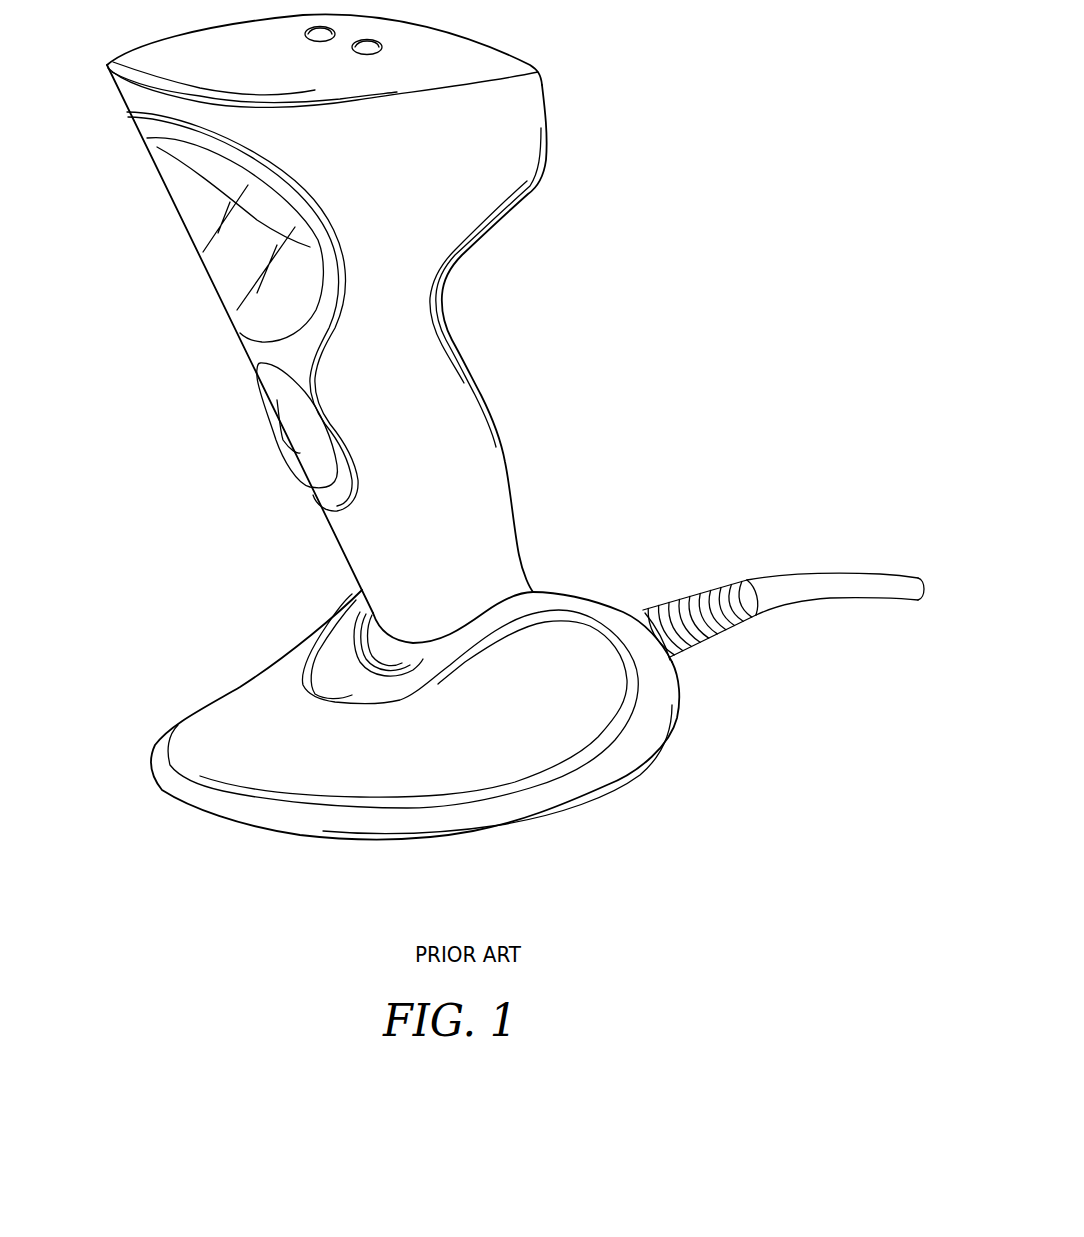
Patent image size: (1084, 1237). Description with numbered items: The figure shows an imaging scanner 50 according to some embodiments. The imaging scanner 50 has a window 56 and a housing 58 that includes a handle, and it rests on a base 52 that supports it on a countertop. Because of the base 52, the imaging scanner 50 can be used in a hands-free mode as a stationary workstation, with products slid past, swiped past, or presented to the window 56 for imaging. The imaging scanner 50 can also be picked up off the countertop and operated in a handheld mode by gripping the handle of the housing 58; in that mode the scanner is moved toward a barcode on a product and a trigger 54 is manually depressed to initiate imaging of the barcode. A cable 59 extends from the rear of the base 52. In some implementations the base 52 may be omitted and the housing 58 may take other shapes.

The imaging scanner 50 is at (515, 426).
The base 52 is at (240, 703).
The trigger 54 is at (277, 432).
The window 56 is at (187, 207).
The housing 58 is at (484, 430).
The cable 59 is at (827, 571).